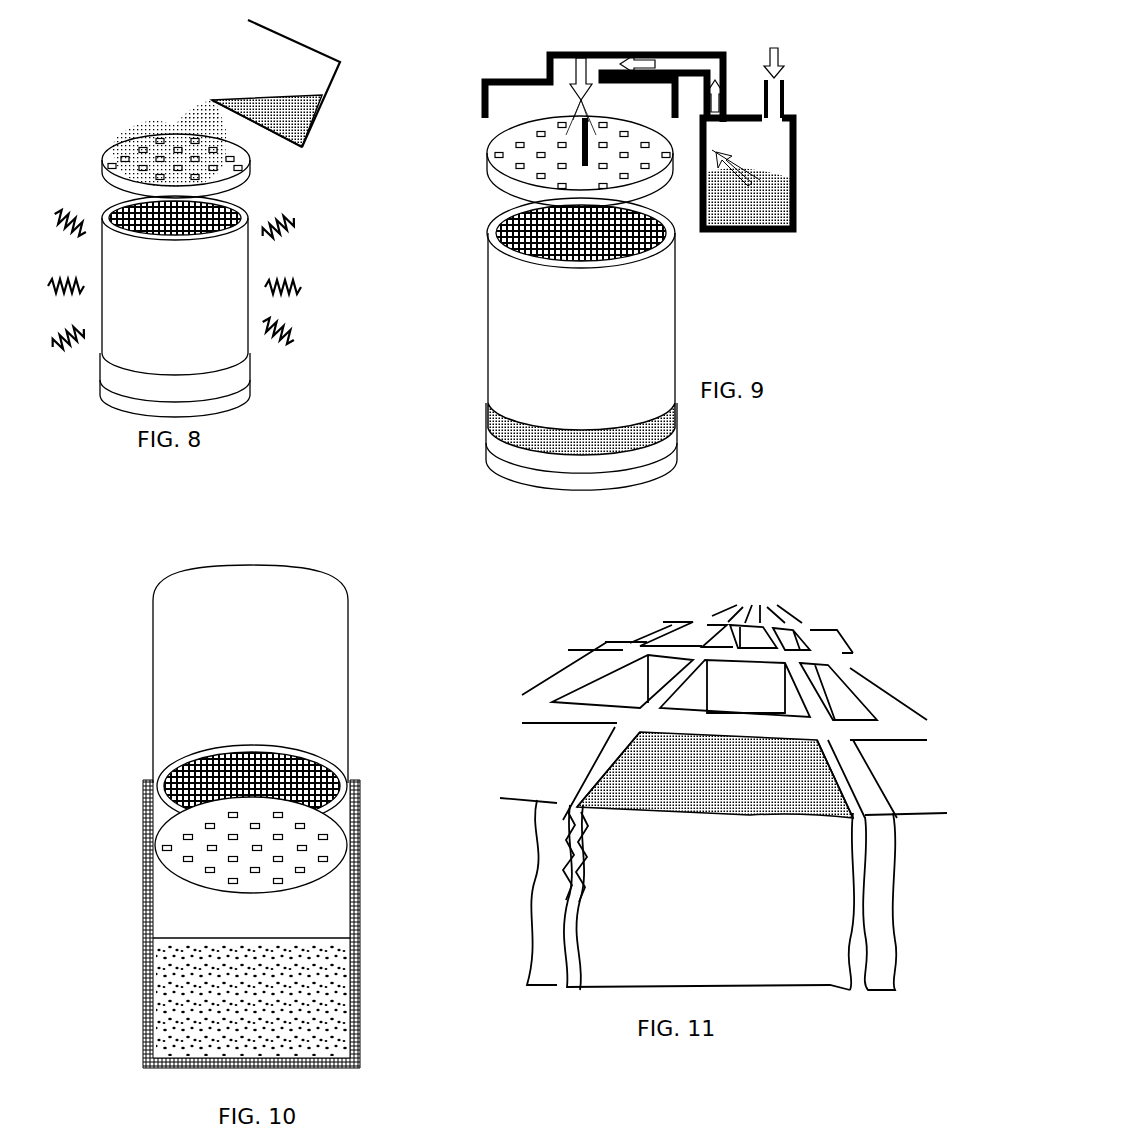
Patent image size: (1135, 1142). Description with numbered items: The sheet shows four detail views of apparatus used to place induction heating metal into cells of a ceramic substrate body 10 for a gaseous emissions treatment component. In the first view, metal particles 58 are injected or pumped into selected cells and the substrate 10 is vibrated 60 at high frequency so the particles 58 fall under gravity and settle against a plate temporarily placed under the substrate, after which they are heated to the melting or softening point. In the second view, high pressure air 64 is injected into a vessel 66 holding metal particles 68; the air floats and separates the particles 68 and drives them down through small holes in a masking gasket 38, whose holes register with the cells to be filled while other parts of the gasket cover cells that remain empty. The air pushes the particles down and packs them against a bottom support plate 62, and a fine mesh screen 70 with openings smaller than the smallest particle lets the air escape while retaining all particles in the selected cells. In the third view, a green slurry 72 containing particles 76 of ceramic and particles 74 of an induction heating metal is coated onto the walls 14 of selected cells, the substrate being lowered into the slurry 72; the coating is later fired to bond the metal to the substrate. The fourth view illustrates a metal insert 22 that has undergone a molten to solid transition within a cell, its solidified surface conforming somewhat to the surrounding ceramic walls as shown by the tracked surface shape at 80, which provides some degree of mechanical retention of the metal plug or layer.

In FIG. 8, the ceramic substrate body 10 is at (92, 270).
In FIG. 9, the ceramic substrate body 10 is at (480, 326).
In FIG. 10, the ceramic substrate body 10 is at (145, 712).
In FIG. 11, the walls 14 is at (550, 816).
In FIG. 11, the metal inserts 22 is at (645, 782).
In FIG. 8, the masking gasket 38 is at (243, 190).
In FIG. 9, the masking gasket 38 is at (490, 163).
In FIG. 10, the masking gasket 38 is at (305, 812).
In FIG. 8, the metal particles 58 is at (180, 148).
In FIG. 8, the vibration 60 is at (278, 290).
In FIG. 8, the bottom support plate 62 is at (137, 388).
In FIG. 9, the bottom support plate 62 is at (535, 458).
In FIG. 9, the high pressure air 64 is at (787, 52).
In FIG. 9, the vessel 66 is at (778, 196).
In FIG. 9, the metal particles 68 is at (578, 104).
In FIG. 9, the fine mesh screen 70 is at (512, 437).
In FIG. 10, the green slurry 72 is at (194, 931).
In FIG. 10, the particles of induction heating metal 74 is at (197, 970).
In FIG. 10, the particles of ceramic 76 is at (180, 1028).
In FIG. 11, the tracked surface shape 80 is at (553, 854).